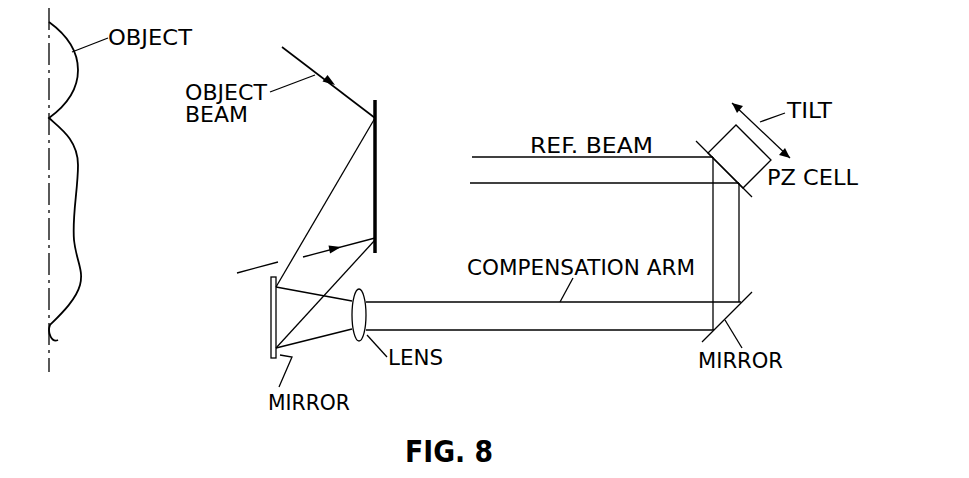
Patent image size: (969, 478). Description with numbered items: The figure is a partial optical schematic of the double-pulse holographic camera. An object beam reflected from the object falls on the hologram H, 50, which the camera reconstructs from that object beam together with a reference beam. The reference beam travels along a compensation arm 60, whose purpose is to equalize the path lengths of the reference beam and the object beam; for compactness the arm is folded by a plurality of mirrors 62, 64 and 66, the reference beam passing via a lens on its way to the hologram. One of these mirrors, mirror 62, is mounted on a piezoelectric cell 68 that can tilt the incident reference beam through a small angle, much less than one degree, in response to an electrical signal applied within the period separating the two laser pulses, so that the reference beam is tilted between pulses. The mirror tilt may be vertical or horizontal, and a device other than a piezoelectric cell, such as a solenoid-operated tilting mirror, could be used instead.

The hologram H is at (375, 132).
The hologram 50 is at (375, 198).
The compensation arm 60 is at (538, 320).
The mirror 62 is at (750, 190).
The mirror 64 is at (745, 299).
The mirror 66 is at (271, 320).
The piezoelectric cell 68 is at (720, 135).